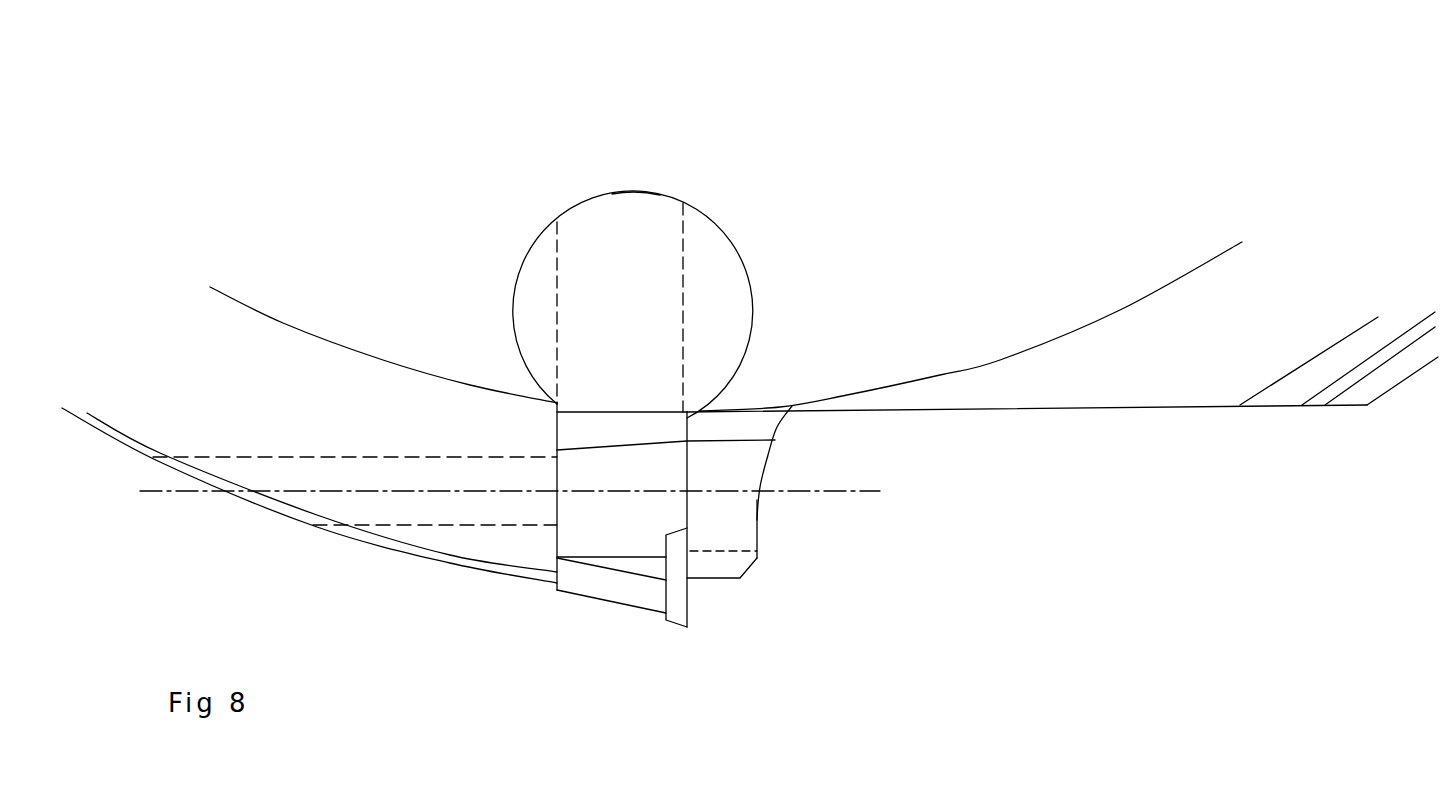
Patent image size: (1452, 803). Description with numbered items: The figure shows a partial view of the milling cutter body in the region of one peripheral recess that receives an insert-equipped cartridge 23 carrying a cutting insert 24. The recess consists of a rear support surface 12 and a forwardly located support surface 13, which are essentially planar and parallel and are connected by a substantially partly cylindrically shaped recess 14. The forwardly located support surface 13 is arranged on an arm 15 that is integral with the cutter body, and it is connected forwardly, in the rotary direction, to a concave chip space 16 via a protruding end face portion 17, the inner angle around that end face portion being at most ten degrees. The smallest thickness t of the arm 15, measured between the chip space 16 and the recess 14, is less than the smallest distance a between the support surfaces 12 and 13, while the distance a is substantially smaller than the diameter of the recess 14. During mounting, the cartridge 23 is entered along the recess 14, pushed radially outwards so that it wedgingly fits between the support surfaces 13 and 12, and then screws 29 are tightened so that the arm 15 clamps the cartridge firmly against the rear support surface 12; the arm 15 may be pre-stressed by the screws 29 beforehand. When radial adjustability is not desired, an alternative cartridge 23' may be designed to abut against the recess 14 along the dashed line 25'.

The rear support surface 12 is at (556, 431).
The forwardly located support surface 13 is at (688, 453).
The substantially partly cylindrically shaped recess 14 is at (523, 267).
The arm 15 is at (748, 507).
The concave chip space 16 is at (768, 455).
The protruding end face portion 17 is at (710, 578).
The insert-equipped cartridge 23 is at (608, 629).
The cartridge 23' is at (678, 307).
The cutting insert 24 is at (671, 631).
The dashed line 25' is at (639, 128).
The screw 29 is at (507, 492).
The smallest distance a is at (523, 560).
The smallest thickness t is at (802, 430).